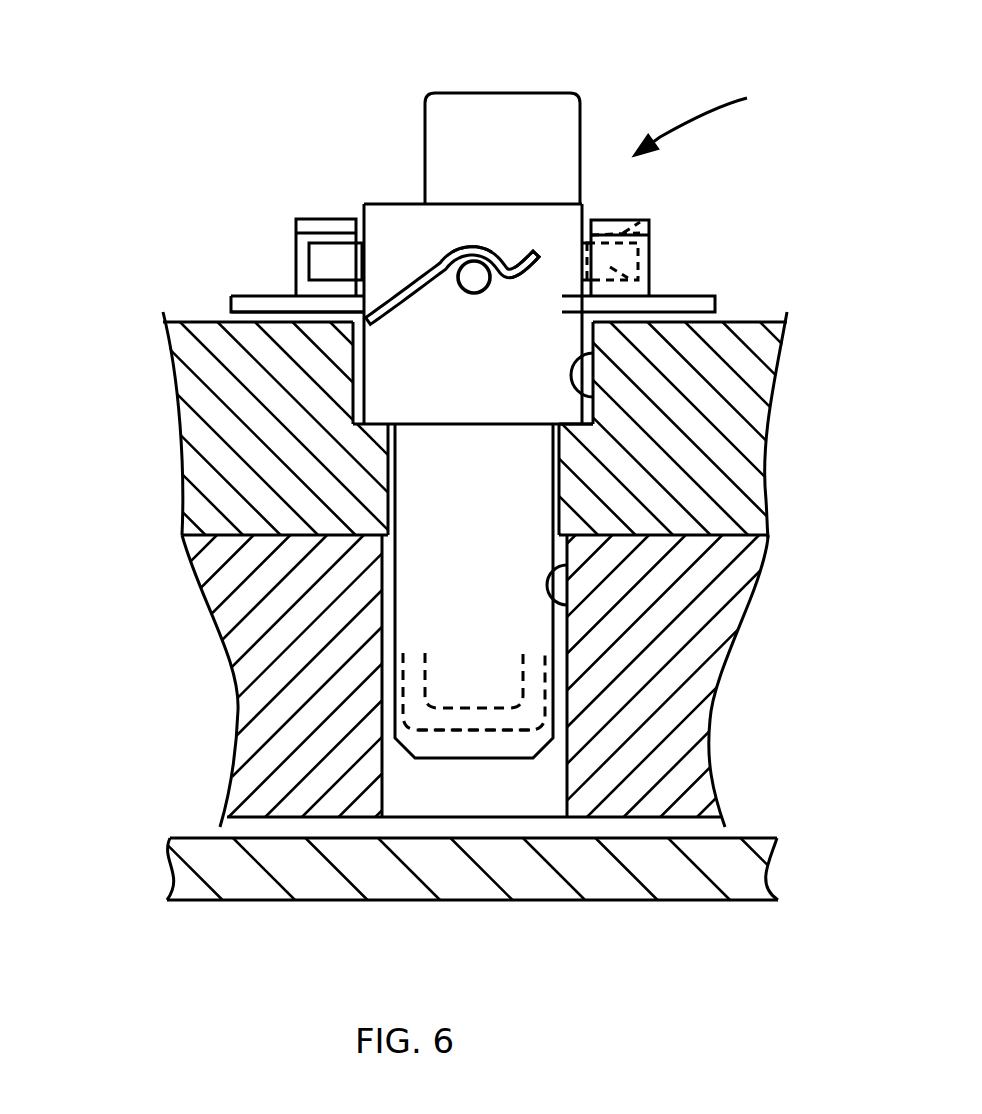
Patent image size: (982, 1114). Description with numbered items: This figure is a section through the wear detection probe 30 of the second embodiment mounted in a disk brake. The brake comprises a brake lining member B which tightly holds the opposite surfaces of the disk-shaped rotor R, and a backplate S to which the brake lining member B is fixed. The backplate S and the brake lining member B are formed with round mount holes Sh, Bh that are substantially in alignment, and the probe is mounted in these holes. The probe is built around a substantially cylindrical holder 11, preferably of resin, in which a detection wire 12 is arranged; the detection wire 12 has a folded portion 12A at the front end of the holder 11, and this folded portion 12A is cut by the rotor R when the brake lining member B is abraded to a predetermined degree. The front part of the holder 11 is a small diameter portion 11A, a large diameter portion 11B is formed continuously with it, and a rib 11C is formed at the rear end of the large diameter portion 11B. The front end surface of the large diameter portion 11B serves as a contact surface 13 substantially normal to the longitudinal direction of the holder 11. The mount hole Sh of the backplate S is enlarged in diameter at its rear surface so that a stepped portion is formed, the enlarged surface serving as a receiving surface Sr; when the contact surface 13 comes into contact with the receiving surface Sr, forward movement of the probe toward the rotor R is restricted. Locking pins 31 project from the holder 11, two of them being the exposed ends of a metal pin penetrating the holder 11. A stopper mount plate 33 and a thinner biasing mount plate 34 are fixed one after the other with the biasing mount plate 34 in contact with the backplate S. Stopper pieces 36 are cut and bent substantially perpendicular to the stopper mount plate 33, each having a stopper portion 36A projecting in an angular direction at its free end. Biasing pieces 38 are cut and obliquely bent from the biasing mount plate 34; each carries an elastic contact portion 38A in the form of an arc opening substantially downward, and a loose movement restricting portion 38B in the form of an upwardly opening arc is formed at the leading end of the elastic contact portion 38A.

The holder 11 is at (567, 213).
The small diameter portion 11A is at (407, 603).
The large diameter portion 11B is at (377, 362).
The rib 11C is at (552, 123).
The detection wire 12 is at (560, 693).
The folded portion 12A is at (545, 745).
The contact surface 13 is at (562, 433).
The wear detection probe 30 is at (791, 100).
The locking pin 31 is at (320, 273).
The stopper mount plate 33 is at (243, 305).
The biasing mount plate 34 is at (232, 315).
The stopper piece 36 is at (296, 245).
The stopper portion 36A is at (320, 228).
The biasing piece 38 is at (433, 282).
The elastic contact portion 38A is at (480, 247).
The loose movement restricting portion 38B is at (532, 252).
The backplate S is at (723, 448).
The mount hole Sh is at (593, 397).
The receiving surface Sr is at (375, 422).
The brake lining member B is at (697, 650).
The mount hole Bh is at (567, 605).
The rotor R is at (740, 857).